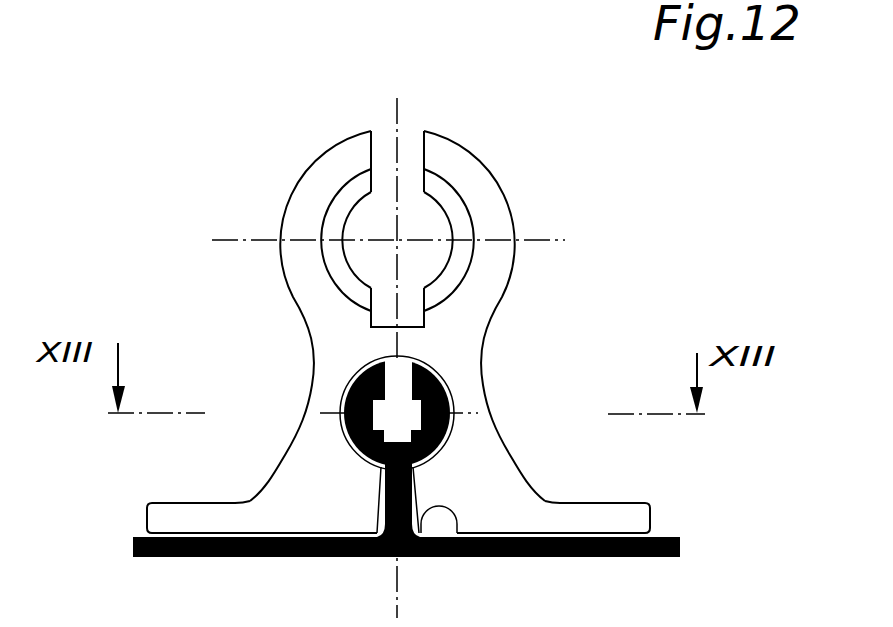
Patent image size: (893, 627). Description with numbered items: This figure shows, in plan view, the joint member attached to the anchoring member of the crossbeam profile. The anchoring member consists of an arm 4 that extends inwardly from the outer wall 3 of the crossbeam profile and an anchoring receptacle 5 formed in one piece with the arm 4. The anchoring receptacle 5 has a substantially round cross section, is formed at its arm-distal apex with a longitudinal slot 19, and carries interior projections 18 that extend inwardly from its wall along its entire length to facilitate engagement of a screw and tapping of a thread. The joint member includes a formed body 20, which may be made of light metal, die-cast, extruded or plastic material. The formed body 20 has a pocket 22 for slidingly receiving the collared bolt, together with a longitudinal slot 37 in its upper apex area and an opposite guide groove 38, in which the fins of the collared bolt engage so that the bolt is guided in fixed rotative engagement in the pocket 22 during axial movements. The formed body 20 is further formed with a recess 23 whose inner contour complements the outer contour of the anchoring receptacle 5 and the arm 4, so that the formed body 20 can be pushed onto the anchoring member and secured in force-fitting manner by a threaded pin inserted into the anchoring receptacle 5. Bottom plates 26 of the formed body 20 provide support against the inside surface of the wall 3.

The outer wall 3 is at (682, 547).
The arm 4 is at (373, 552).
The anchoring receptacle 5 is at (337, 403).
The projections 18 is at (457, 433).
The longitudinal slot 19 is at (399, 396).
The formed body 20 is at (527, 265).
The pocket 22 is at (428, 225).
The recess 23 is at (448, 557).
The bottom plates 26 is at (165, 518).
The longitudinal slot 37 is at (409, 152).
The guide groove 38 is at (390, 300).